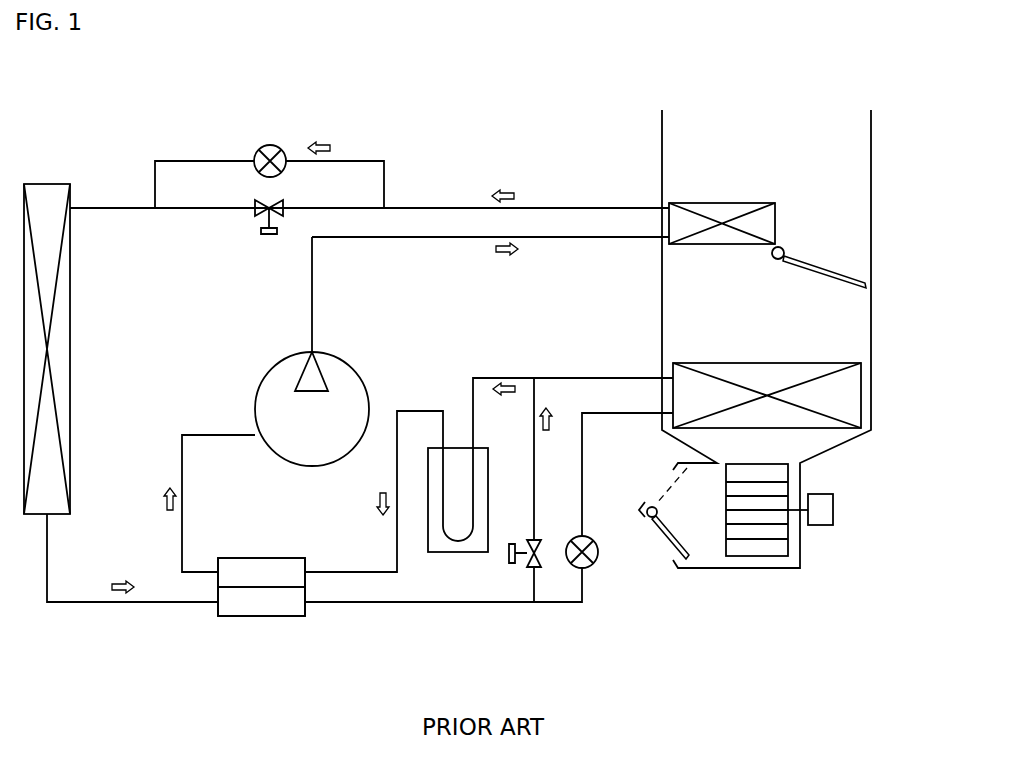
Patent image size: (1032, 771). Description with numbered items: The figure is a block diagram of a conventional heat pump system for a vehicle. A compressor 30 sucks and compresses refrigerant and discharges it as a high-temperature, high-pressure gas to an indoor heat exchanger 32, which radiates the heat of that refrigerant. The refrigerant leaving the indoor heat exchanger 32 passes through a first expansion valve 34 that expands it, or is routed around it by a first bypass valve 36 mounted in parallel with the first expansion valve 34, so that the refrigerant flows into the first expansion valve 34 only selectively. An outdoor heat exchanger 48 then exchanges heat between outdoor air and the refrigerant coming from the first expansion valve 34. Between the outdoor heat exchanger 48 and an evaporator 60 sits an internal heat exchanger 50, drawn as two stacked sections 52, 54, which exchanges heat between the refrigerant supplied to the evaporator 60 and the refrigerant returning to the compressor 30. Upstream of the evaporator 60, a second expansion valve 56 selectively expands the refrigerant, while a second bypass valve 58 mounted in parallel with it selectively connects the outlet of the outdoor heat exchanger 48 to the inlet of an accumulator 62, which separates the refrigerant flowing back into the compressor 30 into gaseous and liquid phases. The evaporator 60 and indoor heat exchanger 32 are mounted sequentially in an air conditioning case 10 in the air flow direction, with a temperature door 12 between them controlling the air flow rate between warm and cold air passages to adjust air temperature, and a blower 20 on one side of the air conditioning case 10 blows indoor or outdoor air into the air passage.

The air conditioning case 10 is at (871, 143).
The temperature door 12 is at (830, 266).
The blower 20 is at (778, 488).
The compressor 30 is at (280, 364).
The indoor heat exchanger 32 is at (720, 203).
The first expansion valve 34 is at (270, 145).
The first bypass valve 36 is at (267, 236).
The outdoor heat exchanger 48 is at (47, 184).
The internal heat exchanger 50 is at (288, 617).
The lower heat exchanger 52 is at (255, 606).
The upper heat exchanger 54 is at (255, 569).
The second expansion valve 56 is at (597, 565).
The second bypass valve 58 is at (509, 563).
The evaporator 60 is at (843, 395).
The accumulator 62 is at (458, 448).